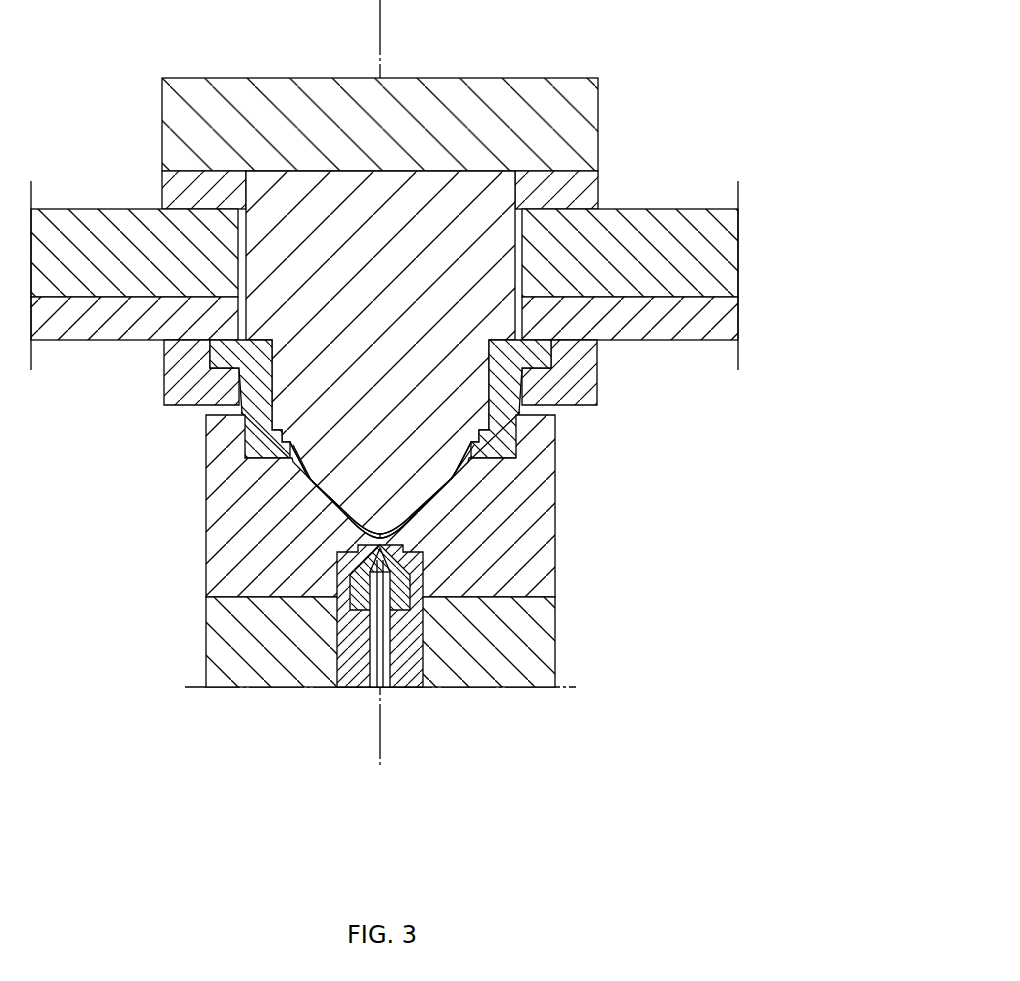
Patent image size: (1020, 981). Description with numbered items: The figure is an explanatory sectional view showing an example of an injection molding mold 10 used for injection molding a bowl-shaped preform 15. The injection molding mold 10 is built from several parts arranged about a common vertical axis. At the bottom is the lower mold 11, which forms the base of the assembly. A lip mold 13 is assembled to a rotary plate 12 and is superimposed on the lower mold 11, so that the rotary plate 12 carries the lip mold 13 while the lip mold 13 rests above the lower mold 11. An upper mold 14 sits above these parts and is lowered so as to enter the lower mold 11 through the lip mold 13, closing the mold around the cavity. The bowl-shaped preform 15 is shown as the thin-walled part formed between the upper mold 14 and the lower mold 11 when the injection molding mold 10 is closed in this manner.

The injection molding mold 10 is at (619, 112).
The lower mold 11 is at (556, 575).
The rotary plate 12 is at (673, 327).
The lip mold 13 is at (540, 393).
The upper mold 14 is at (437, 233).
The bowl-shaped preform 15 is at (430, 510).